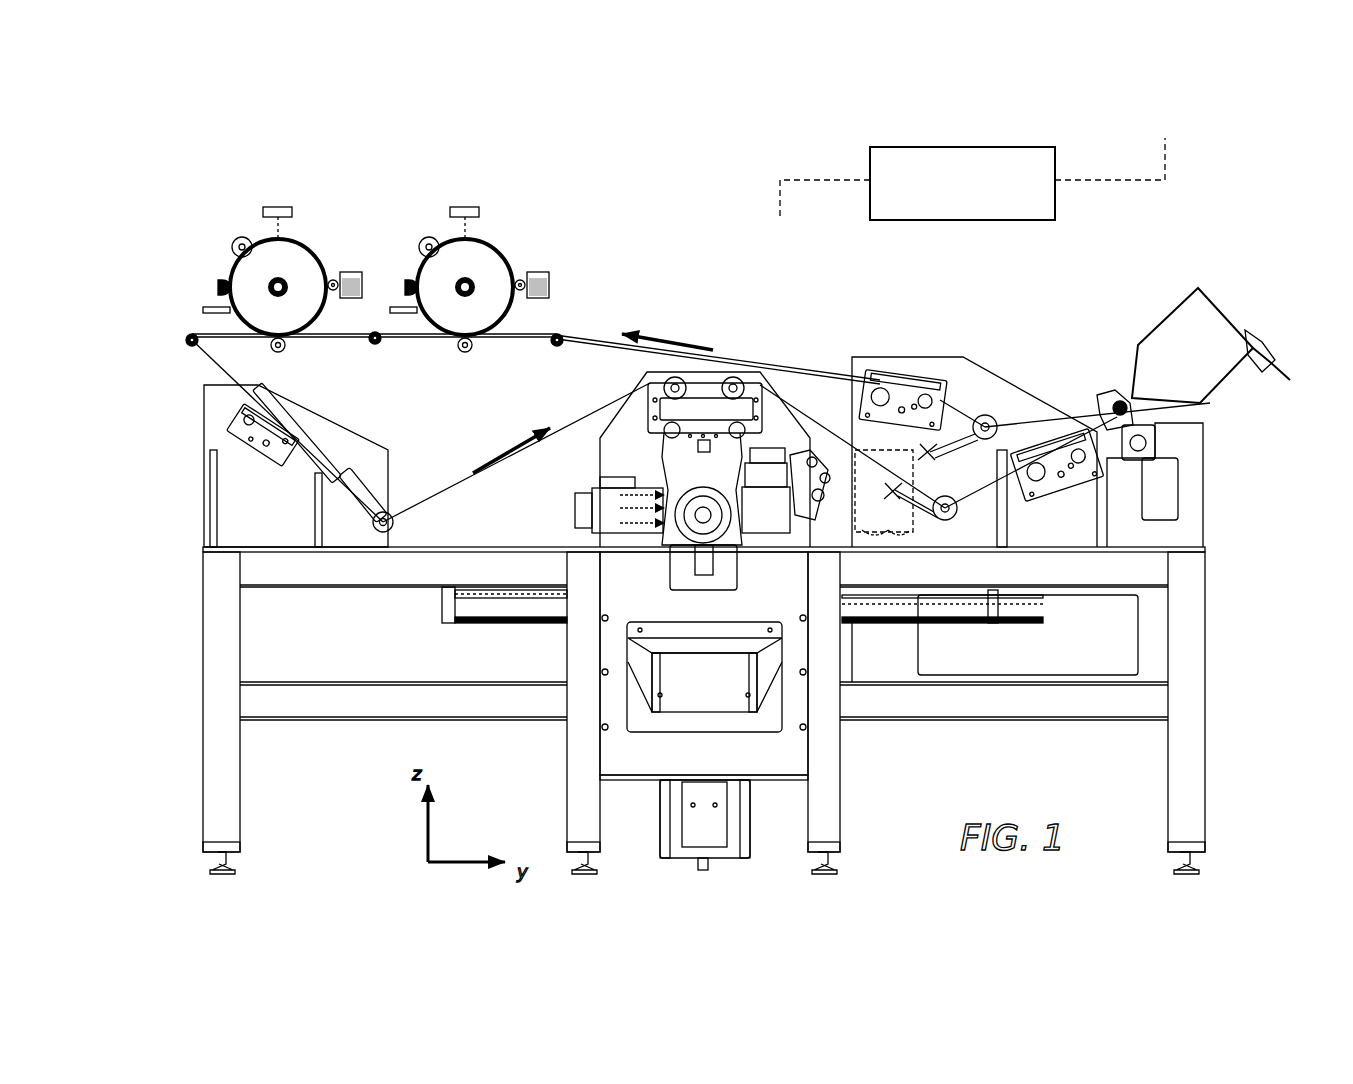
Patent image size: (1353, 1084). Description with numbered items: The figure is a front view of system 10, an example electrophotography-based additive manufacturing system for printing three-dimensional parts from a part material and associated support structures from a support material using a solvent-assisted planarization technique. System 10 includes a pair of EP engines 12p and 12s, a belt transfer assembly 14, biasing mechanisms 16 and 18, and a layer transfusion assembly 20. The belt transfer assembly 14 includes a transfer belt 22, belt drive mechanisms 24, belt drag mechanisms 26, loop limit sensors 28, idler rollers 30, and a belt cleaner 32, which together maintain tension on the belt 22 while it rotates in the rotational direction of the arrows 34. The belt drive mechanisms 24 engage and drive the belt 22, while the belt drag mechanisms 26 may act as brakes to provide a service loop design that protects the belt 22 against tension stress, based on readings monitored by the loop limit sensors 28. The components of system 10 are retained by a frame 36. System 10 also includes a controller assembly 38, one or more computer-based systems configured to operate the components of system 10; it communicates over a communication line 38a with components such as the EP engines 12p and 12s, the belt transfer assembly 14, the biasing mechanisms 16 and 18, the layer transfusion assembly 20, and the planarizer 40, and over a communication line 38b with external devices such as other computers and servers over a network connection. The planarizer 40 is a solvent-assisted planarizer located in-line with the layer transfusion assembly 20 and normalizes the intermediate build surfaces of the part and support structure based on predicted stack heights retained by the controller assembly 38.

The system 10 is at (226, 178).
The EP engine 12p is at (305, 228).
The EP engine 12s is at (517, 242).
The belt transfer assembly 14 is at (250, 480).
The biasing mechanism 16 is at (462, 352).
The biasing mechanism 18 is at (286, 350).
The layer transfusion assembly 20 is at (830, 272).
The transfer belt 22 is at (470, 492).
The belt drive mechanism 24 is at (287, 417).
The belt drag mechanism 26 is at (655, 392).
The loop limit sensor 28 is at (380, 527).
The idler roller 30 is at (186, 345).
The belt cleaner 32 is at (1173, 317).
The arrows 34 is at (532, 440).
The frame 36 is at (407, 707).
The controller assembly 38 is at (958, 220).
The communication line 38a is at (798, 180).
The communication line 38b is at (1165, 165).
The planarizer 40 is at (915, 522).